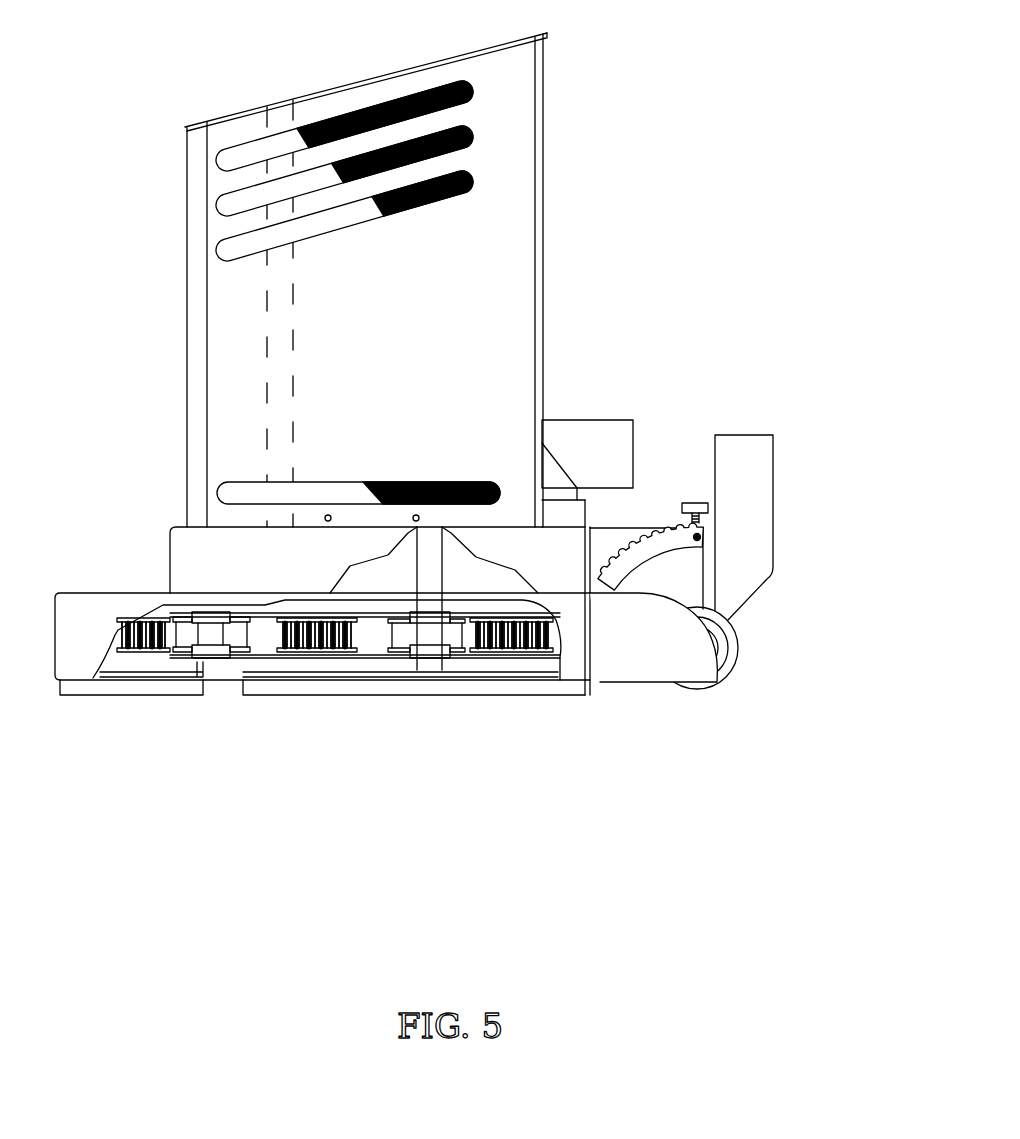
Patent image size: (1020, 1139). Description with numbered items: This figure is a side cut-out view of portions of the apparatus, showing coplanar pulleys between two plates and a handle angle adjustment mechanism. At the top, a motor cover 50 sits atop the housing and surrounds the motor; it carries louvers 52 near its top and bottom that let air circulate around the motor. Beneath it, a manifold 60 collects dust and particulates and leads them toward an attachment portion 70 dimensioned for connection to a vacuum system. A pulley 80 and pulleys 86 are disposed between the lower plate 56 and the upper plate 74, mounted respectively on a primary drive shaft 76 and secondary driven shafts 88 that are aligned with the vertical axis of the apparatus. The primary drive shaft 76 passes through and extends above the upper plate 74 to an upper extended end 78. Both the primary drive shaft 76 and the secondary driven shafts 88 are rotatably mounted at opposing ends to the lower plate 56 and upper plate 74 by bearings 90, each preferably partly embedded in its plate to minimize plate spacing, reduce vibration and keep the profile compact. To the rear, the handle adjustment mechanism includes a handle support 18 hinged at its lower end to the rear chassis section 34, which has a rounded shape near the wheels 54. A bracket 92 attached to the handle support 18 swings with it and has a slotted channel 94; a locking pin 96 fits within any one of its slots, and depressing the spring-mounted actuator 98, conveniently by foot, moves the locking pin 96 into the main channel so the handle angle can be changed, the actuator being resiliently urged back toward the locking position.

The handle support 18 is at (747, 487).
The rear chassis section 34 is at (663, 655).
The motor cover 50 is at (235, 295).
The louvers 52 is at (217, 162).
The wheels 54 is at (732, 665).
The lower plate 56 is at (508, 665).
The manifold 60 is at (569, 438).
The attachment portion 70 is at (600, 438).
The upper plate 74 is at (522, 607).
The primary drive shaft 76 is at (432, 665).
The upper extended end 78 is at (430, 547).
The pulley 80 is at (405, 635).
The pulleys 86 is at (188, 635).
The secondary driven shafts 88 is at (213, 663).
The bearings 90 is at (193, 613).
The bracket 92 is at (688, 565).
The slotted channel 94 is at (665, 537).
The locking pin 96 is at (702, 538).
The spring-mounted actuator 98 is at (696, 503).